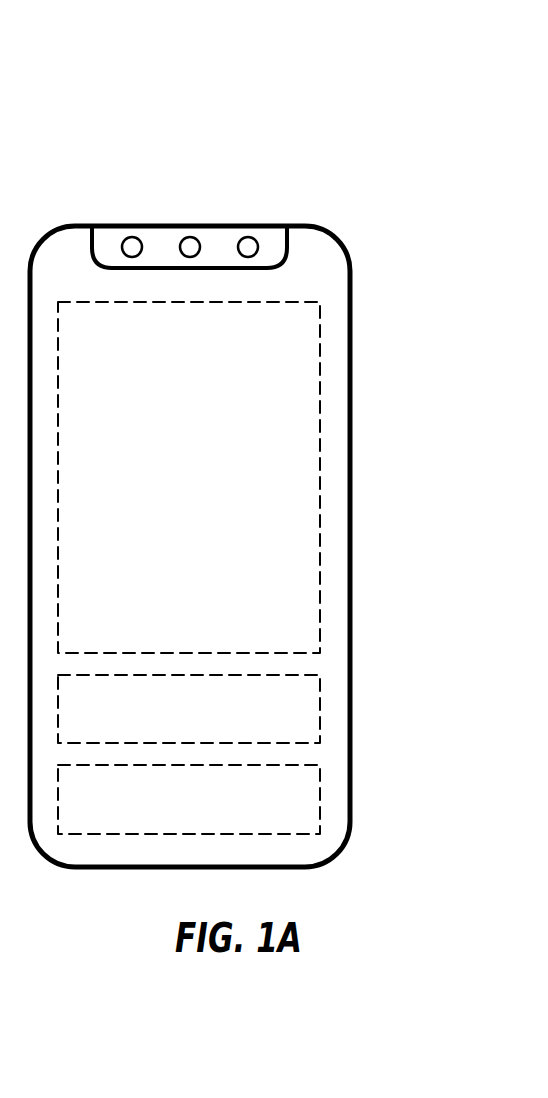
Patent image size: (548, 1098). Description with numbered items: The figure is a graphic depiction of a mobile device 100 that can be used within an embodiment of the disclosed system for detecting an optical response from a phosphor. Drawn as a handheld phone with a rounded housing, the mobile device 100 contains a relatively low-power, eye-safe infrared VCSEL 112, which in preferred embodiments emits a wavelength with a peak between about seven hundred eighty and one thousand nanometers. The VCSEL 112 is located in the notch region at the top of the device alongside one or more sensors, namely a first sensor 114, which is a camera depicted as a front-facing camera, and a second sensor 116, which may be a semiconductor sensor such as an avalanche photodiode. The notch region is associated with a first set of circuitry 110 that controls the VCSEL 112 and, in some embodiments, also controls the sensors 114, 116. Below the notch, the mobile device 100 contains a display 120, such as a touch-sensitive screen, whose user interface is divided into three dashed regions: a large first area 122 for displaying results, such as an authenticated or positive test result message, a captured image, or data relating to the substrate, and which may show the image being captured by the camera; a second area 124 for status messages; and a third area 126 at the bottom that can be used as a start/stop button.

The mobile device 100 is at (190, 68).
The first set of circuitry 110 is at (272, 240).
The infrared VCSEL 112 is at (128, 236).
The first sensor 114 is at (187, 237).
The second sensor 116 is at (248, 237).
The display 120 is at (328, 280).
The first area 122 is at (322, 465).
The second area 124 is at (322, 702).
The third area 126 is at (322, 798).